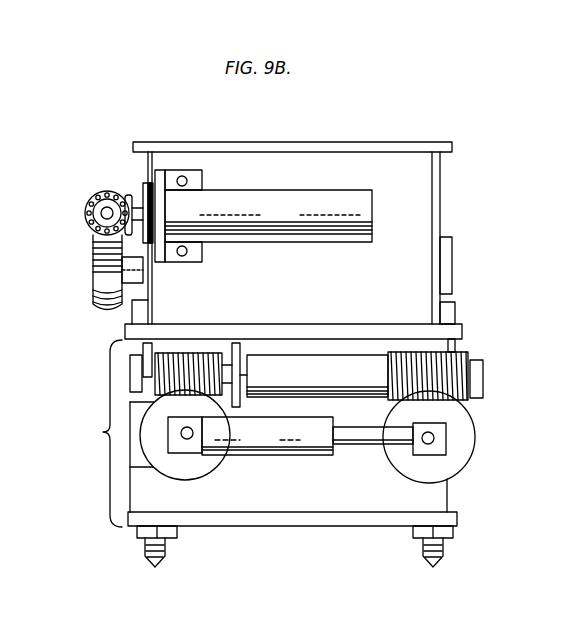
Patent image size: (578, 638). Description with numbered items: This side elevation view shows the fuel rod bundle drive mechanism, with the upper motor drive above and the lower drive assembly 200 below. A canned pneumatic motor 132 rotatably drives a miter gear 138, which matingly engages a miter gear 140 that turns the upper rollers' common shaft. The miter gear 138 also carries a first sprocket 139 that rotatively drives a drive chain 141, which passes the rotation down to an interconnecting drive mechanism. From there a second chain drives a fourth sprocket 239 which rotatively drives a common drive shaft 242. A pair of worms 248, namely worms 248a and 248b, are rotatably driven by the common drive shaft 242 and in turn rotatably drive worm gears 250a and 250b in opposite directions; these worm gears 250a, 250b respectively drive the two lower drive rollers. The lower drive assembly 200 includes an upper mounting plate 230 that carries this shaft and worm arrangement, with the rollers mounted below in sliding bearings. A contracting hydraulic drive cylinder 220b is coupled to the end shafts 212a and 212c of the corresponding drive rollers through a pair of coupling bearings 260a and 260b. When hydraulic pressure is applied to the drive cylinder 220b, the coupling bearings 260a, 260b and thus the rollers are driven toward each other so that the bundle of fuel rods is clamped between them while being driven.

The canned pneumatic motor 132 is at (297, 192).
The miter gear 138 is at (127, 196).
The first sprocket 139 is at (152, 184).
The miter gear 140 is at (104, 192).
The drive chain 141 is at (153, 293).
The lower drive assembly 200 is at (93, 433).
The upper mounting plate 230 is at (236, 343).
The fourth sprocket 239 is at (290, 357).
The worms 248 is at (360, 370).
The worm 248a is at (217, 355).
The worm 248b is at (462, 356).
The common drive shaft 242 is at (484, 384).
The worm gear 250a is at (194, 466).
The worm gear 250b is at (462, 456).
The coupling bearing 260a is at (168, 430).
The coupling bearing 260b is at (440, 422).
The end shaft 212a is at (193, 433).
The end shaft 212c is at (426, 443).
The drive cylinder 220b is at (290, 448).